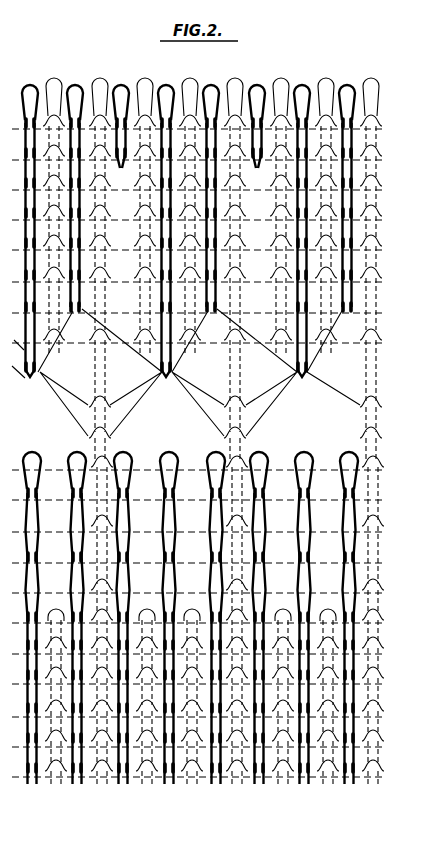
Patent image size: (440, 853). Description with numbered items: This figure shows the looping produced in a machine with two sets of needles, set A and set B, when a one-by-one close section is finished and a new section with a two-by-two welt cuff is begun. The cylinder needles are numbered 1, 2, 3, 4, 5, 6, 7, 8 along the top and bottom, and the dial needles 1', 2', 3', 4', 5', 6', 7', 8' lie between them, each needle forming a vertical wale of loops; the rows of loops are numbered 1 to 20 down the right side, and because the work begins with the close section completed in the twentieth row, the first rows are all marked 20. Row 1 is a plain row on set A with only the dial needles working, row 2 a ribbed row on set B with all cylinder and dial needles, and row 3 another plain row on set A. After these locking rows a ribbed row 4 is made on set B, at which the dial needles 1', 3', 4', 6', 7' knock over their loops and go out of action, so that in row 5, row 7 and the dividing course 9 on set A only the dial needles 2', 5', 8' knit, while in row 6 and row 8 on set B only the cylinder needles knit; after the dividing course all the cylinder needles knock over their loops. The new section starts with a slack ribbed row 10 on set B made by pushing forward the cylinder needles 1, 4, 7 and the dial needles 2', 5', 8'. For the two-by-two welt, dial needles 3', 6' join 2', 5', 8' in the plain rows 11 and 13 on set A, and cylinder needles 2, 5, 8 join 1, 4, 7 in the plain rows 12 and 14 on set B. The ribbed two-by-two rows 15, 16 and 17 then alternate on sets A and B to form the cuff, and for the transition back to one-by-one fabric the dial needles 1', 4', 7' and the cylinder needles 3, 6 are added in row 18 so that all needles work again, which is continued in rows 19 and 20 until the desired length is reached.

The cylinder needle / row 1 is at (206, 438).
The cylinder needle / row 2 is at (206, 438).
The cylinder needle / row 3 is at (206, 438).
The cylinder needle / row 4 is at (206, 438).
The cylinder needle / row 5 is at (206, 438).
The cylinder needle / row 6 is at (206, 438).
The cylinder needle / row 7 is at (207, 438).
The cylinder needle / row 8 is at (206, 438).
The row 9 (dividing course) 9 is at (206, 463).
The row 10 (slack ribbed row) 10 is at (383, 437).
The row 11 is at (383, 406).
The row 12 is at (352, 305).
The row 13 is at (212, 340).
The row 14 is at (212, 308).
The row 15 (2:2 ribbed row) 15 is at (209, 278).
The row 16 is at (209, 247).
The row 17 is at (210, 217).
The row 18 (1:1 close ribbed row) 18 is at (209, 186).
The row 19 is at (209, 155).
The row 20 is at (209, 447).
The dial needle 1' is at (55, 439).
The dial needle 2' is at (101, 439).
The dial needle 3' is at (146, 439).
The dial needle 4' is at (191, 439).
The dial needle 5' is at (236, 439).
The dial needle 6' is at (282, 439).
The dial needle 7' is at (327, 439).
The dial needle 8' is at (372, 439).